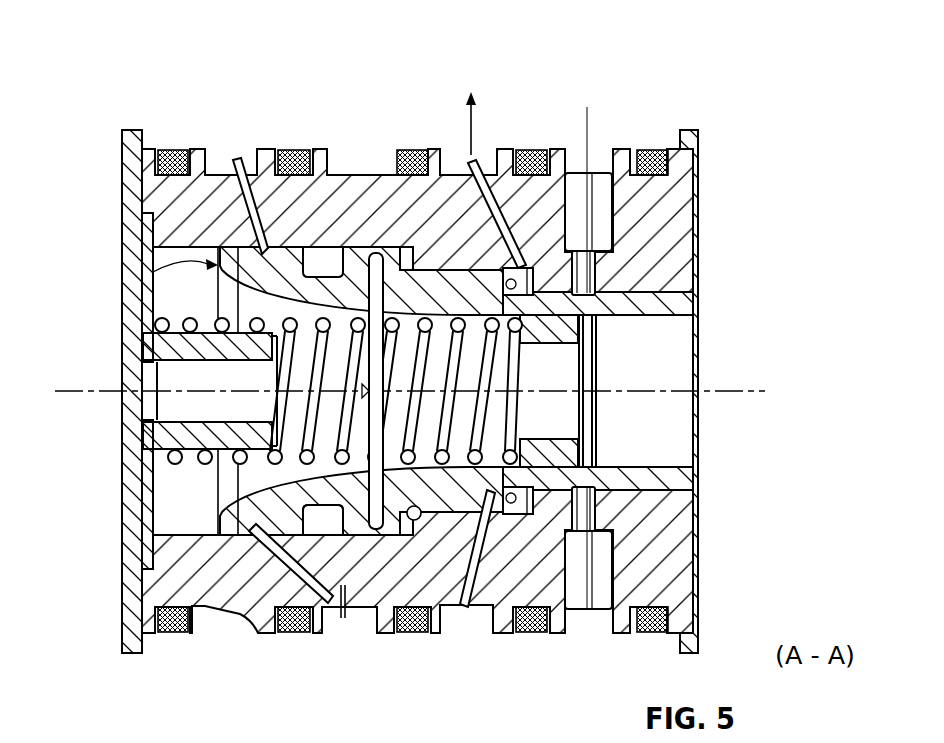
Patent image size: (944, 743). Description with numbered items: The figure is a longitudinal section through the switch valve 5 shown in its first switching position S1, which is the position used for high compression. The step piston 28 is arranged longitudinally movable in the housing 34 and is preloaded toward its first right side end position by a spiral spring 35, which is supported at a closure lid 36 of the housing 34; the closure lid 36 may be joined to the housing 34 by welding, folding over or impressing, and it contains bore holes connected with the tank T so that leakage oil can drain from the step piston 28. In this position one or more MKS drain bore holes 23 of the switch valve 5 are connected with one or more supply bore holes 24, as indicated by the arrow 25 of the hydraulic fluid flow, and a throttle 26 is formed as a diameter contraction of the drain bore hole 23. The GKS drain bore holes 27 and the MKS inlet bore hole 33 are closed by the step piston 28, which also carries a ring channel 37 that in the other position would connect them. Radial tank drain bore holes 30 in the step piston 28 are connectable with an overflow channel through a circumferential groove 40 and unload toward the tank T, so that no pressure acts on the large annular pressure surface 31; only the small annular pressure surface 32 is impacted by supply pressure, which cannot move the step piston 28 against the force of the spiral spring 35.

The switch valve 5 is at (784, 156).
The MKS drain bore hole 23 is at (598, 178).
The supply bore hole 24 is at (475, 168).
The arrow of the hydraulic fluid flow 25 is at (472, 135).
The throttle 26 is at (595, 272).
The GKS drain bore hole 27 is at (236, 158).
The step piston 28 is at (150, 272).
The tank drain bore hole 30 is at (347, 250).
The large annular pressure surface 31 is at (420, 545).
The small annular pressure surface 32 is at (518, 608).
The MKS inlet bore hole 33 is at (265, 602).
The housing 34 is at (704, 237).
The spiral spring 35 is at (205, 462).
The closure lid 36 is at (132, 307).
The ring channel 37 is at (325, 602).
The circumferential groove 40 is at (378, 250).
The first switching position S1 is at (790, 327).
The tank T is at (397, 393).